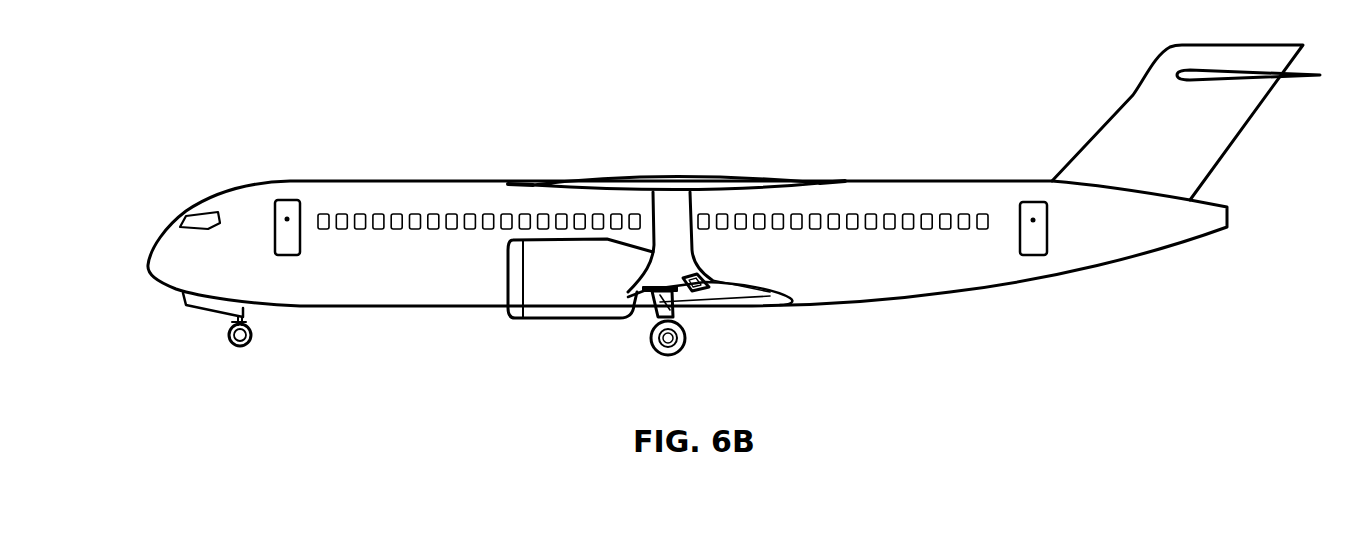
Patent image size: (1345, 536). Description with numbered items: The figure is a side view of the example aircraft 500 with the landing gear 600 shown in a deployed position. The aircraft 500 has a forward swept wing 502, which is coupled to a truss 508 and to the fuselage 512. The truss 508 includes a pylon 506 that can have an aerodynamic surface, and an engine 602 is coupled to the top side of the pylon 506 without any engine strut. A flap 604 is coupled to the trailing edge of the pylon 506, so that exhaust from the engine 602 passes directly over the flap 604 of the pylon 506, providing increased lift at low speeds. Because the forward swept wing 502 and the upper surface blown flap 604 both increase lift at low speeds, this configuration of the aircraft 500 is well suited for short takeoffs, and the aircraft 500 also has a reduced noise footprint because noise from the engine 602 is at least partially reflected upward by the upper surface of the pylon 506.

The aircraft 500 is at (338, 52).
The forward swept wing 502 is at (597, 175).
The pylon 506 is at (690, 300).
The truss 508 is at (690, 238).
The fuselage 512 is at (840, 308).
The landing gear 600 is at (650, 313).
The engine 602 is at (548, 303).
The flap 604 is at (702, 291).